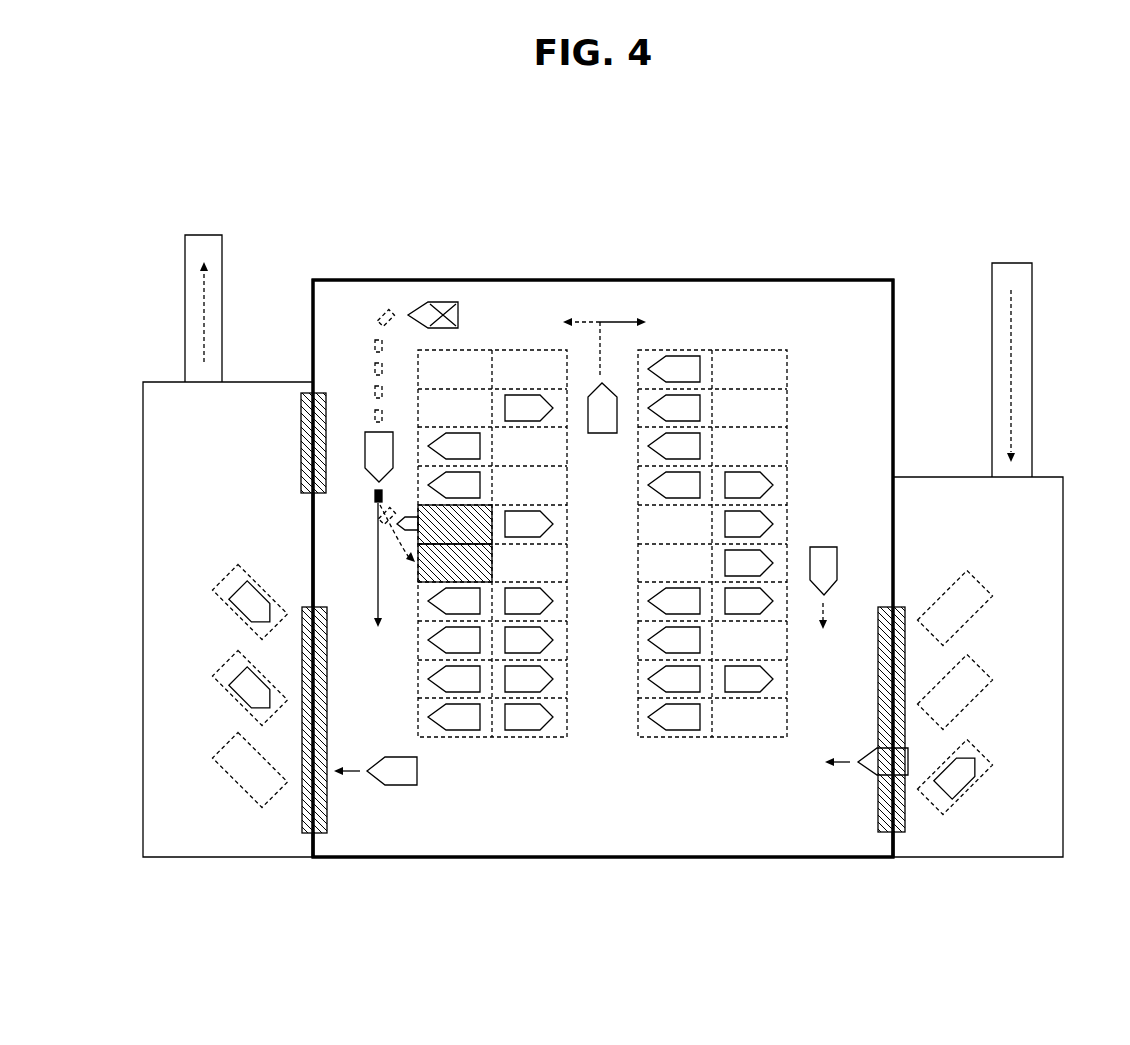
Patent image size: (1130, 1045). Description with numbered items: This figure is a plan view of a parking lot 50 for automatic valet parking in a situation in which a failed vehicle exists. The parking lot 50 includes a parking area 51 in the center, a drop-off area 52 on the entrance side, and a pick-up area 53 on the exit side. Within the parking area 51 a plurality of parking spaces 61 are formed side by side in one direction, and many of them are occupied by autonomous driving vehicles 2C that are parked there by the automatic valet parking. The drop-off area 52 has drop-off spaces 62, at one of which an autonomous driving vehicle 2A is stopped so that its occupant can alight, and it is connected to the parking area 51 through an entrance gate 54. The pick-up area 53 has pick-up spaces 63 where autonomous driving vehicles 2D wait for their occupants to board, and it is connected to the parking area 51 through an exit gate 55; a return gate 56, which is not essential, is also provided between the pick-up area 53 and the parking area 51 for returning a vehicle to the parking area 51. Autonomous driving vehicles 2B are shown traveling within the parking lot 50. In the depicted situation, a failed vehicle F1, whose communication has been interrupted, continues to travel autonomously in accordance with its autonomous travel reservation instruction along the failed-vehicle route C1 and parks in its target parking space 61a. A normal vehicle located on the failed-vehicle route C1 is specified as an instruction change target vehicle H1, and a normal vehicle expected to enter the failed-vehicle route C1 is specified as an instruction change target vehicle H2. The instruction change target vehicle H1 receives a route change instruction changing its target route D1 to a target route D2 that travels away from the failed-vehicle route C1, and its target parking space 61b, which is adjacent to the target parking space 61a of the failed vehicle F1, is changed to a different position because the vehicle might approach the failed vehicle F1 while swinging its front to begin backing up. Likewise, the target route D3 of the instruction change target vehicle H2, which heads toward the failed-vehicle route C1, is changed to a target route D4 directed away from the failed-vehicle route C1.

The parking lot 50 is at (940, 222).
The parking area 51 is at (808, 280).
The drop-off area 52 is at (1063, 514).
The pick-up area 53 is at (143, 410).
The entrance gate 54 is at (890, 832).
The exit gate 55 is at (326, 833).
The return gate 56 is at (326, 412).
The parking space 61 is at (537, 350).
The target parking space of the failed vehicle 61a is at (420, 518).
The target parking space before changing a route of the instruction change target ve 61b is at (420, 575).
The drop-off space 62 is at (990, 745).
The pick-up space 63 is at (232, 568).
The autonomous driving vehicle 2A is at (985, 784).
The autonomous driving vehicle 2B is at (838, 557).
The autonomous driving vehicle 2C is at (700, 369).
The autonomous driving vehicle 2D is at (235, 594).
The failed-vehicle route C1 is at (386, 312).
The failed vehicle F1 is at (437, 302).
The instruction change target vehicle H1 is at (370, 446).
The instruction change target vehicle H2 is at (592, 395).
The target route before changing a route of the instruction change target vehicle H1 D1 is at (410, 560).
The target route after changing a route of the instruction change target vehicle H1 D2 is at (404, 522).
The target route before changing a route of the instruction change target vehicle H2 D3 is at (585, 322).
The target route after changing a route of the instruction change target vehicle H2 D4 is at (620, 322).